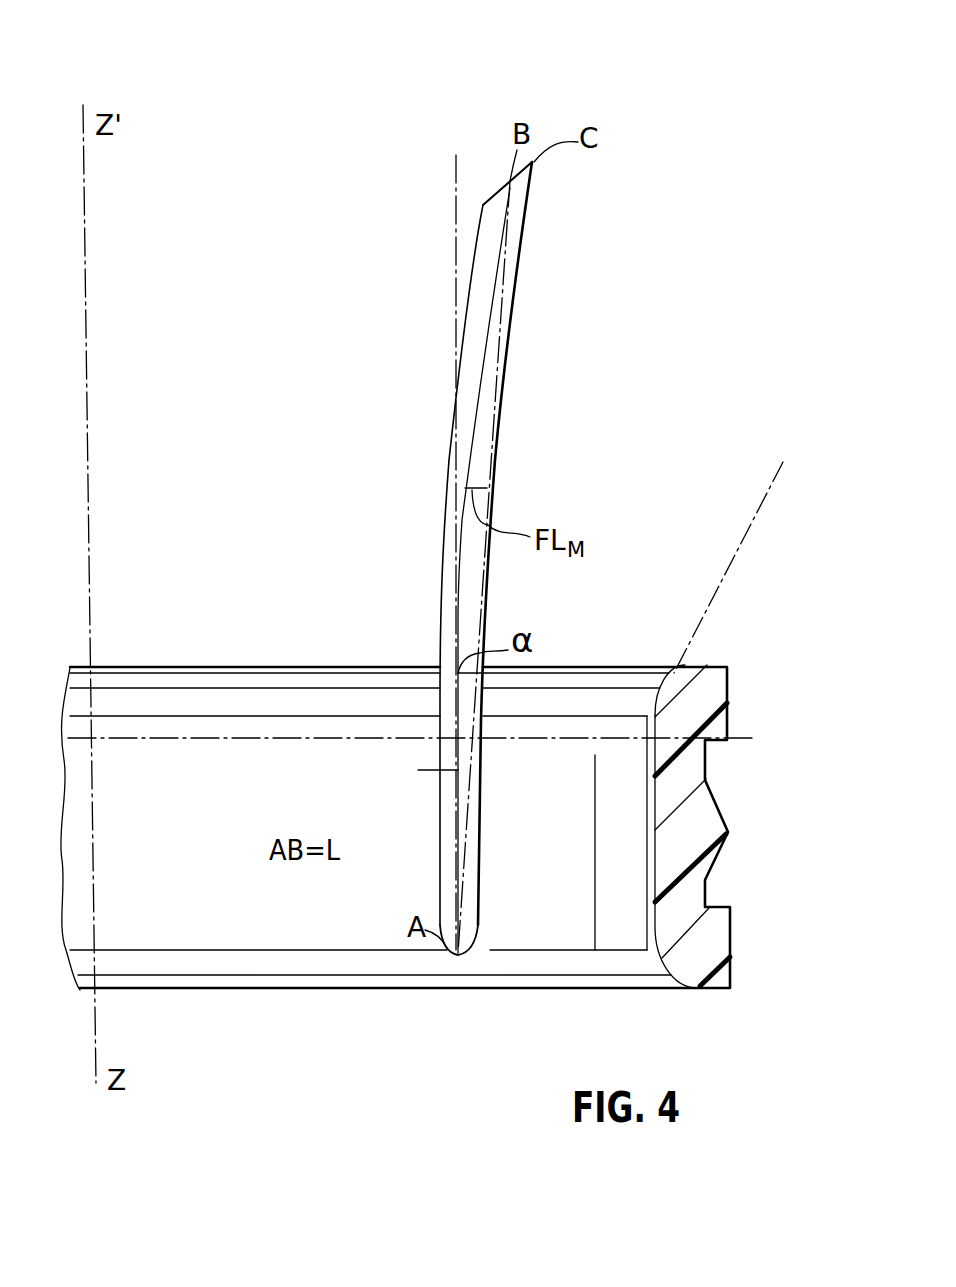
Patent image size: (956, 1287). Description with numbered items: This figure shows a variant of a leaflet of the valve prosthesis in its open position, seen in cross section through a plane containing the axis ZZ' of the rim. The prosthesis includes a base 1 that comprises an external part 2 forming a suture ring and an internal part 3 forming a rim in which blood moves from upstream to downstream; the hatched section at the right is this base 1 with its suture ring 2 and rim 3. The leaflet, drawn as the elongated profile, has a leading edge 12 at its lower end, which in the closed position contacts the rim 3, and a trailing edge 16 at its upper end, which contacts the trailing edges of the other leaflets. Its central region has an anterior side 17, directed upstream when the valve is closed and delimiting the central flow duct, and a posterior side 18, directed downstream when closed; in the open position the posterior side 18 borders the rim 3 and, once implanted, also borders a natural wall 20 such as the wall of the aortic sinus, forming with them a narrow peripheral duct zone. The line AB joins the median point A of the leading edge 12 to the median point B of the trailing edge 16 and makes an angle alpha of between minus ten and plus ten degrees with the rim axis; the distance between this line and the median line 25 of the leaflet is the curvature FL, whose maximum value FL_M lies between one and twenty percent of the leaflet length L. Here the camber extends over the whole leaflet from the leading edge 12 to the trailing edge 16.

The base 1 is at (778, 674).
The external part 2 is at (715, 798).
The internal part 3 is at (647, 716).
The leading edge 12 is at (478, 941).
The trailing edge 16 is at (493, 197).
The anterior side 17 is at (443, 438).
The posterior side 18 is at (493, 478).
The natural wall 20 is at (750, 567).
The median line 25 is at (403, 782).